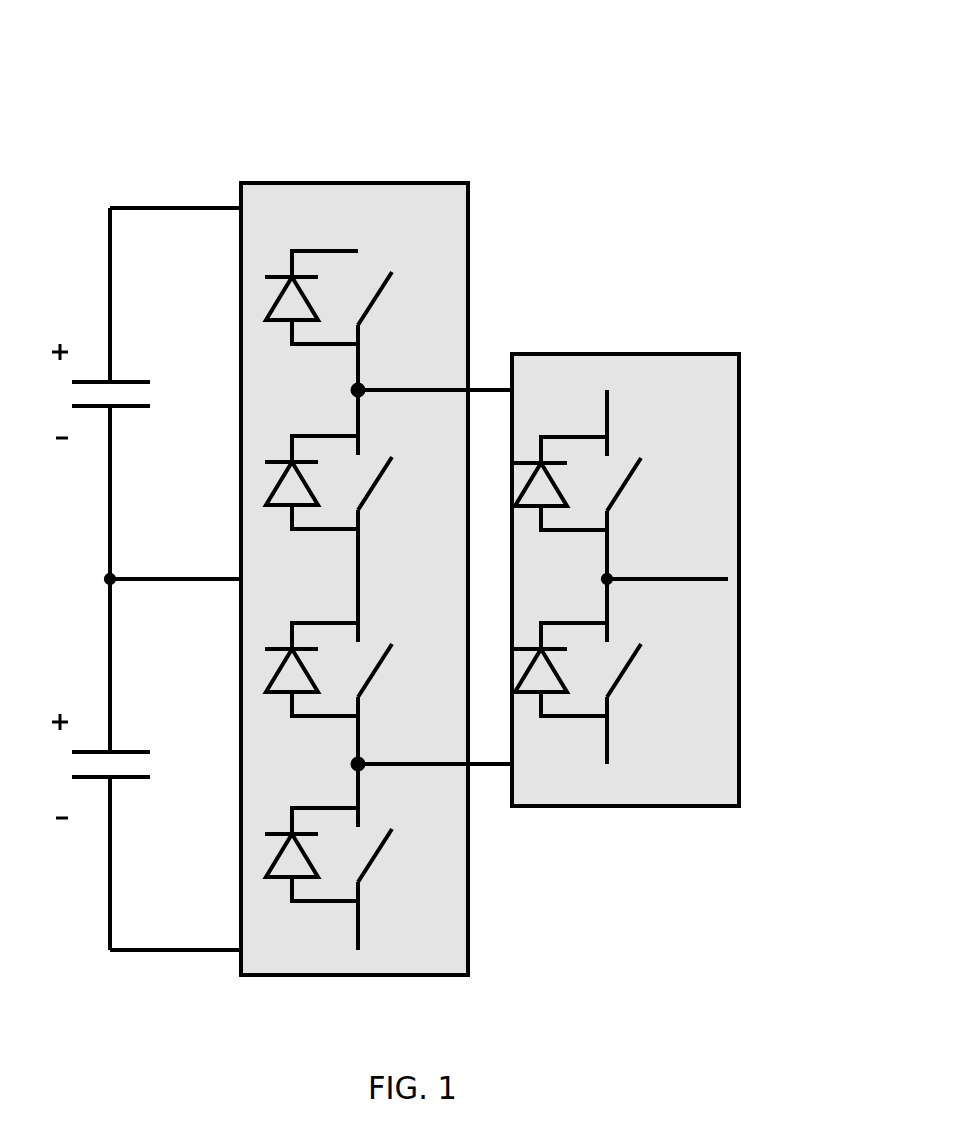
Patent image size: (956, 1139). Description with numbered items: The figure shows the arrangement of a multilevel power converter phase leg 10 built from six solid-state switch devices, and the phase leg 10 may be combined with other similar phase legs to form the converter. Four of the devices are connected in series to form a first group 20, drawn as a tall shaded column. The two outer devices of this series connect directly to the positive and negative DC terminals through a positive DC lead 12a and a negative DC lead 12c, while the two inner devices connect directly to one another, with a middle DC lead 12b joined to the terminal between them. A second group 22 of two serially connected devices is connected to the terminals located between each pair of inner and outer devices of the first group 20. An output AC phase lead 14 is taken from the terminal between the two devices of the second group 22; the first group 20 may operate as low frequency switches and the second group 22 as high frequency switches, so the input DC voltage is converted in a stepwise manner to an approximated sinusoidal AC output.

The phase leg 10 is at (660, 95).
The positive DC lead 12a is at (234, 225).
The middle DC lead 12b is at (234, 565).
The negative DC lead 12c is at (234, 945).
The output AC phase lead 14 is at (700, 577).
The first group 20 is at (319, 183).
The second group 22 is at (738, 353).